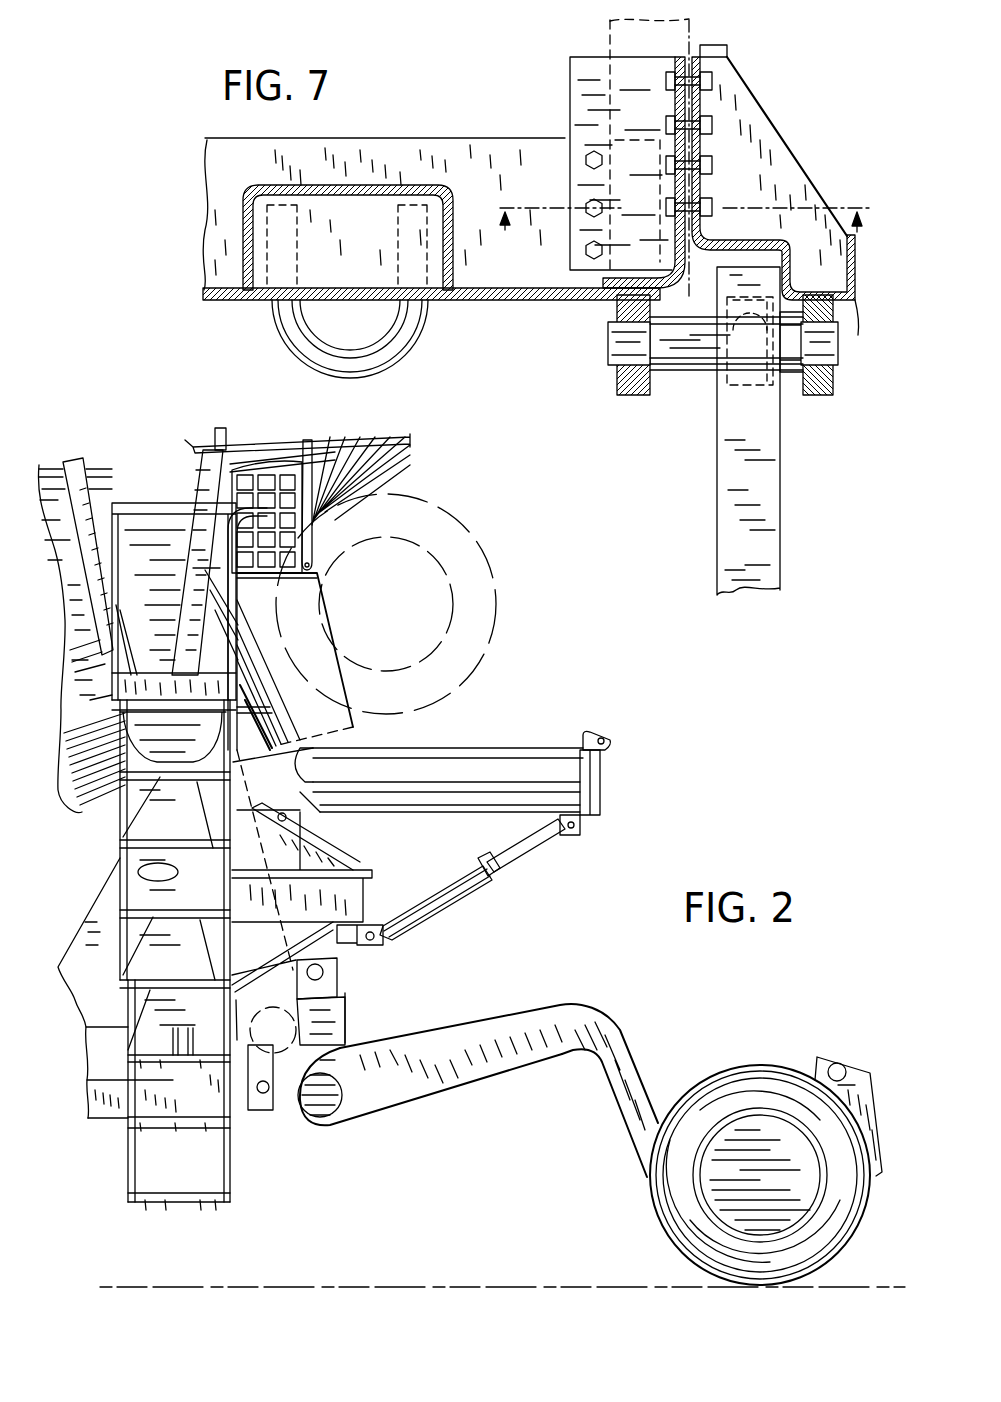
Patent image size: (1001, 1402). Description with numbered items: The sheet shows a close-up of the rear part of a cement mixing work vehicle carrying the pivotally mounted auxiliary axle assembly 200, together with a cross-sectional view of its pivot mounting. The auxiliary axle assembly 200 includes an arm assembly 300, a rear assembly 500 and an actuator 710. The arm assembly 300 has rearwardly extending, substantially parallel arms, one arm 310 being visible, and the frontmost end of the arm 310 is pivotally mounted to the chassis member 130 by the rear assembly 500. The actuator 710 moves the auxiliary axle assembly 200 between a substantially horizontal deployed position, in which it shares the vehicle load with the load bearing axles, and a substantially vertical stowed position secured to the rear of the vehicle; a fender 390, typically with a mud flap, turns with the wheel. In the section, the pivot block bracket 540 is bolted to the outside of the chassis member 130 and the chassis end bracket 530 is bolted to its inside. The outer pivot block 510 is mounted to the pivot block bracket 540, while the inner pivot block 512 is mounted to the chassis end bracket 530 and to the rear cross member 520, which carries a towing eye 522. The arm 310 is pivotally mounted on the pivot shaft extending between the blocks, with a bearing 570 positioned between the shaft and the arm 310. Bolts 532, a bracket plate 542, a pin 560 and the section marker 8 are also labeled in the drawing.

In FIG. 7, the chassis member 130 is at (633, 40).
In FIG. 7, the chassis end bracket 530 is at (584, 66).
In FIG. 7, the rear cross member 520 is at (476, 126).
In FIG. 7, the bolts 532 is at (585, 250).
In FIG. 7, the rear assembly 500 is at (773, 80).
In FIG. 2, the rear assembly 500 is at (275, 1145).
In FIG. 7, the bracket plate 542 is at (790, 180).
In FIG. 7, the section line 8- 8 is at (681, 206).
In FIG. 7, the towing eye 522 is at (392, 348).
In FIG. 7, the pivot block bracket 540 is at (846, 343).
In FIG. 7, the inner pivot block 512 is at (618, 391).
In FIG. 7, the outer pivot block 510 is at (818, 396).
In FIG. 7, the pivot pin 560 is at (706, 370).
In FIG. 7, the bearing 570 is at (742, 370).
In FIG. 7, the arm 310 is at (768, 497).
In FIG. 2, the auxiliary axle assembly 200 is at (597, 893).
In FIG. 2, the actuator 710 is at (340, 990).
In FIG. 2, the arm assembly 300 is at (373, 1020).
In FIG. 2, the fender 390 is at (862, 1066).